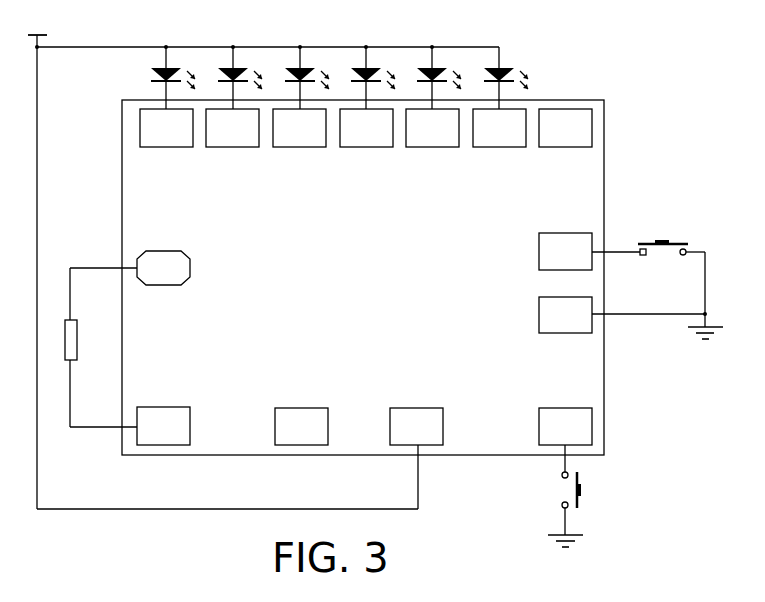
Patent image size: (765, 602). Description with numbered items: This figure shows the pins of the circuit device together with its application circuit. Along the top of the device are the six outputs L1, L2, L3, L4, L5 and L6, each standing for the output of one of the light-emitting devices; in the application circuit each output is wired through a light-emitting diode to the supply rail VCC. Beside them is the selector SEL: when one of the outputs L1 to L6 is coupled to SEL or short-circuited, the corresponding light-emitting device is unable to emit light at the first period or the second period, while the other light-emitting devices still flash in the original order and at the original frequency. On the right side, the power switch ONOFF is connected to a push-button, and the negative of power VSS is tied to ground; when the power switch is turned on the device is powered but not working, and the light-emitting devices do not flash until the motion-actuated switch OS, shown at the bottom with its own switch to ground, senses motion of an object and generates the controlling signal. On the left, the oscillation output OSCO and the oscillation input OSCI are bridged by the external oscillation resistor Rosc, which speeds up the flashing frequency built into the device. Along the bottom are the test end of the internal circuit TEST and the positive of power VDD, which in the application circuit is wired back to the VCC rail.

The supply voltage rail VCC is at (253, 259).
The output of light-emitting device L1 is at (167, 108).
The output of light-emitting device L2 is at (234, 108).
The output of light-emitting device L3 is at (301, 108).
The output of light-emitting device L4 is at (367, 108).
The output of light-emitting device L5 is at (433, 108).
The output of light-emitting device L6 is at (500, 109).
The selector SEL is at (565, 140).
The power switch ONOFF is at (585, 286).
The negative of power VSS is at (597, 315).
The oscillation output OSCO is at (130, 285).
The external oscillation resistor Rosc is at (101, 373).
The oscillation input OSCI is at (162, 416).
The test end of the internal circuit TEST is at (300, 416).
The positive of power VDD is at (240, 448).
The motion-actuated switch OS is at (565, 467).